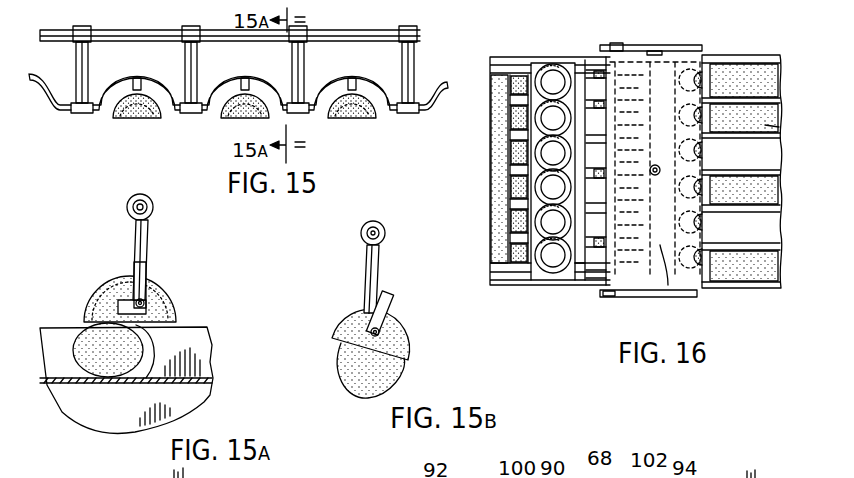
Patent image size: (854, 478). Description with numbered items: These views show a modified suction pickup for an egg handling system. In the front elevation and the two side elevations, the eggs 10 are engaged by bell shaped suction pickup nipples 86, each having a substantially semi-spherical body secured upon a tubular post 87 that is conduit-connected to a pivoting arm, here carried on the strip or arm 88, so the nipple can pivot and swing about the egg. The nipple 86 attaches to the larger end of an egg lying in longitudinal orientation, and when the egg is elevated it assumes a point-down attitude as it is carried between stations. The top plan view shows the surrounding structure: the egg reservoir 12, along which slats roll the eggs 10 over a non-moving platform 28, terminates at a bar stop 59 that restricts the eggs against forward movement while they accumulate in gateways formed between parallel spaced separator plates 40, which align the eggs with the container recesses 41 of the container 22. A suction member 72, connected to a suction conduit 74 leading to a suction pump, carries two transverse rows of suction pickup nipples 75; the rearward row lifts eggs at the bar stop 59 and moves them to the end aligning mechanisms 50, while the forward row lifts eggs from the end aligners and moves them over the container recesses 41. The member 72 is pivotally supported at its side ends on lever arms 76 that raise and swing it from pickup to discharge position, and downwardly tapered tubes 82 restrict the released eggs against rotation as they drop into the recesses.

In FIG. 15A, the egg 10 is at (90, 337).
In FIG. 15B, the egg 10 is at (352, 372).
In FIG. 16, the egg reservoir 12 is at (745, 54).
In FIG. 16, the container 22 is at (494, 183).
In FIG. 16, the non-moving platform 28 is at (765, 125).
In FIG. 16, the gateway separator plates 40 is at (724, 170).
In FIG. 16, the container recess 41 is at (500, 138).
In FIG. 16, the end aligning mechanism 50 is at (587, 262).
In FIG. 16, the bar stop 59 is at (698, 58).
In FIG. 16, the suction member 72 is at (668, 285).
In FIG. 16, the suction conduit 74 is at (656, 165).
In FIG. 16, the suction pickup nipple 75 is at (603, 66).
In FIG. 16, the lever arm 76 is at (645, 50).
In FIG. 16, the downwardly tapered tube 82 is at (537, 64).
In FIG. 15, the bell shaped suction pickup nipple 86 is at (160, 118).
In FIG. 15A, the bell shaped suction pickup nipple 86 is at (166, 292).
In FIG. 15B, the bell shaped suction pickup nipple 86 is at (406, 337).
In FIG. 15, the tubular post 87 is at (135, 82).
In FIG. 15, the spring strip arm 88 is at (152, 80).
In FIG. 15A, the spring strip arm 88 is at (146, 272).
In FIG. 15B, the spring strip arm 88 is at (393, 299).